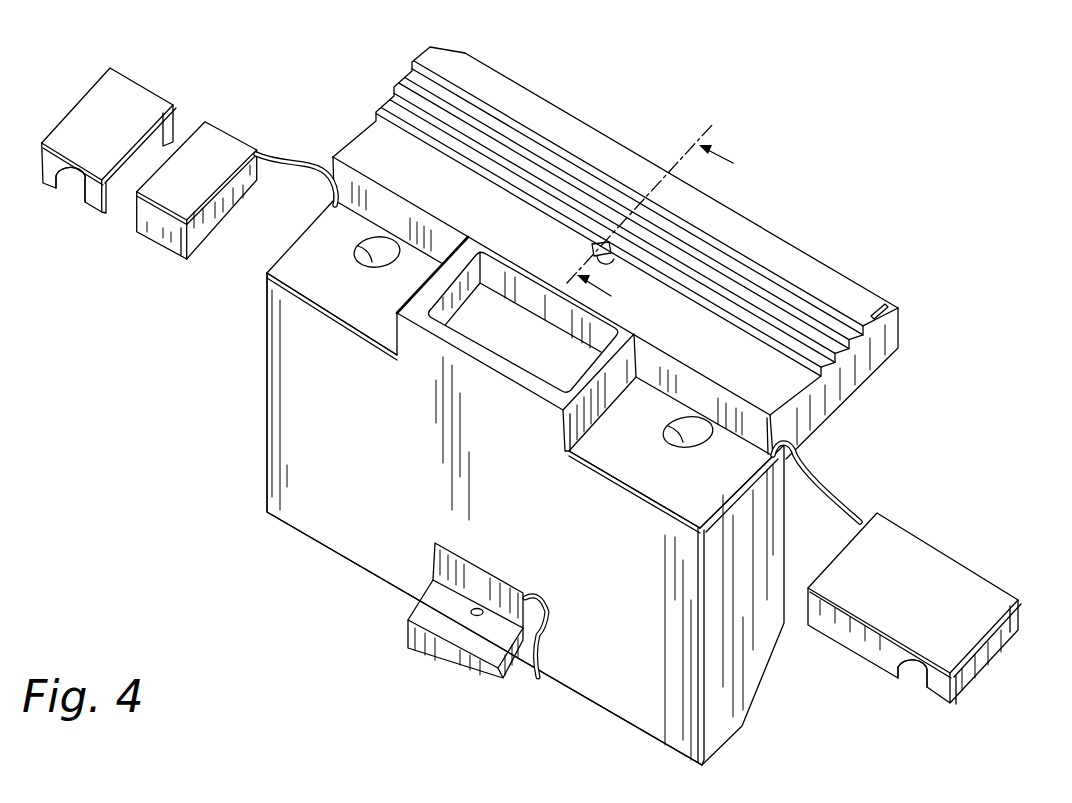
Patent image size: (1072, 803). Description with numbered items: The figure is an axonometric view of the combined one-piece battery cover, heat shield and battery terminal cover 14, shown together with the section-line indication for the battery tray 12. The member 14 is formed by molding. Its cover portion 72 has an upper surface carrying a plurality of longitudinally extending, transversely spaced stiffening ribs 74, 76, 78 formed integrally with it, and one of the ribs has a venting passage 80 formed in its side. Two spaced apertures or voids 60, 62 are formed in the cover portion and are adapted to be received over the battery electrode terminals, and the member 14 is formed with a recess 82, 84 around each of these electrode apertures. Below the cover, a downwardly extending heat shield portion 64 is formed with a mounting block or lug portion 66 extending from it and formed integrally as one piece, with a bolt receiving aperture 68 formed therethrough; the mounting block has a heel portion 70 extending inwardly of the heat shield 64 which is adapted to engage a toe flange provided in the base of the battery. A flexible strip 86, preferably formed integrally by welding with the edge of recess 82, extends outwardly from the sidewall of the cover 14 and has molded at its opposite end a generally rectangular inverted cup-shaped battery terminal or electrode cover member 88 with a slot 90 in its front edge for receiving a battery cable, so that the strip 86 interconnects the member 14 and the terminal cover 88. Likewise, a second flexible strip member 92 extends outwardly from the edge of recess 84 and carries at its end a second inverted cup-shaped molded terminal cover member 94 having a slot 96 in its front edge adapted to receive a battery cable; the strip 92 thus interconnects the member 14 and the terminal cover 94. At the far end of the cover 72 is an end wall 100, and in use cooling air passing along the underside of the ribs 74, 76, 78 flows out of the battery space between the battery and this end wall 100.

The battery tray 12 is at (665, 220).
The combined battery cover, heat shield and battery terminal cover 14 is at (212, 421).
The aperture 60 is at (370, 250).
The aperture 62 is at (682, 428).
The heat shield portion 64 is at (327, 452).
The mounting block 66 is at (422, 653).
The bolt receiving aperture 68 is at (470, 608).
The heel portion 70 is at (546, 619).
The cover portion 72 is at (484, 94).
The stiffening rib 74 is at (857, 340).
The stiffening rib 76 is at (853, 323).
The stiffening rib 78 is at (812, 293).
The venting passage 80 is at (608, 270).
The recess 82 is at (350, 308).
The recess 84 is at (672, 480).
The flexible strip 86 is at (282, 160).
The battery terminal cover member 88 is at (75, 107).
The slot 90 is at (70, 190).
The flexible strip member 92 is at (818, 485).
The battery terminal cover member 94 is at (945, 550).
The slot 96 is at (913, 680).
The end wall 100 is at (848, 405).